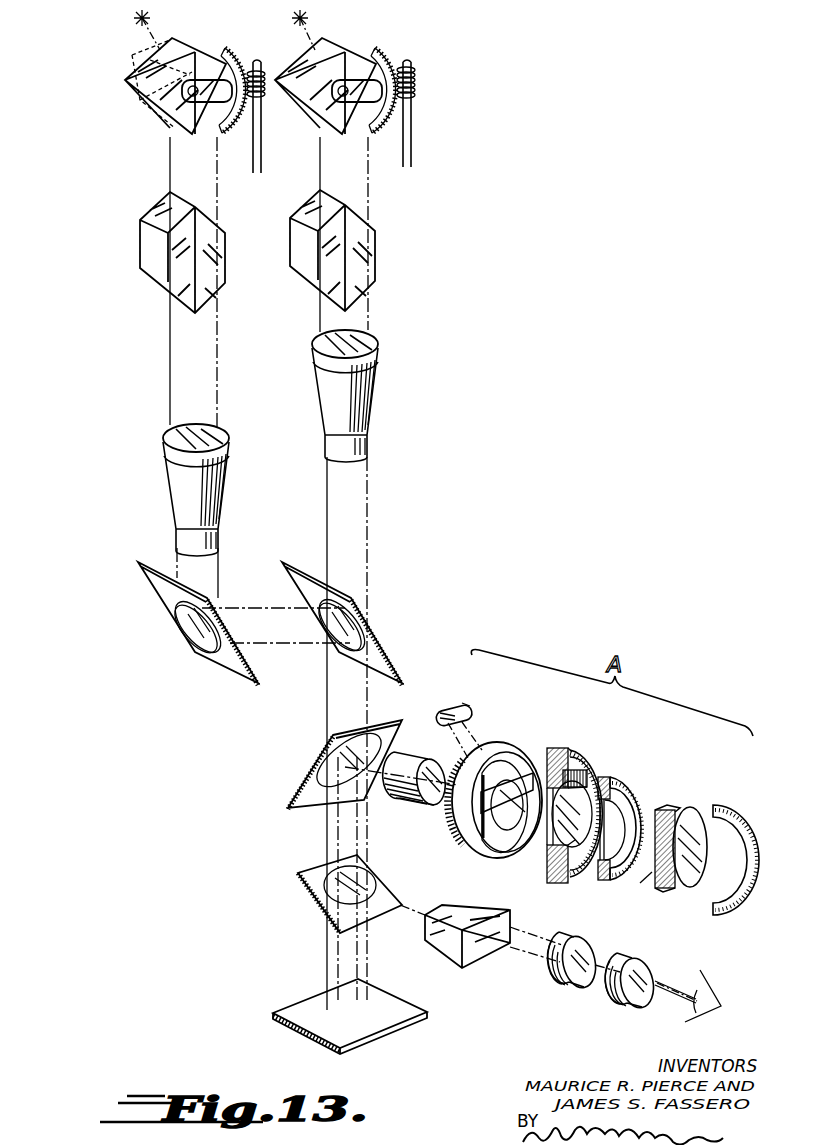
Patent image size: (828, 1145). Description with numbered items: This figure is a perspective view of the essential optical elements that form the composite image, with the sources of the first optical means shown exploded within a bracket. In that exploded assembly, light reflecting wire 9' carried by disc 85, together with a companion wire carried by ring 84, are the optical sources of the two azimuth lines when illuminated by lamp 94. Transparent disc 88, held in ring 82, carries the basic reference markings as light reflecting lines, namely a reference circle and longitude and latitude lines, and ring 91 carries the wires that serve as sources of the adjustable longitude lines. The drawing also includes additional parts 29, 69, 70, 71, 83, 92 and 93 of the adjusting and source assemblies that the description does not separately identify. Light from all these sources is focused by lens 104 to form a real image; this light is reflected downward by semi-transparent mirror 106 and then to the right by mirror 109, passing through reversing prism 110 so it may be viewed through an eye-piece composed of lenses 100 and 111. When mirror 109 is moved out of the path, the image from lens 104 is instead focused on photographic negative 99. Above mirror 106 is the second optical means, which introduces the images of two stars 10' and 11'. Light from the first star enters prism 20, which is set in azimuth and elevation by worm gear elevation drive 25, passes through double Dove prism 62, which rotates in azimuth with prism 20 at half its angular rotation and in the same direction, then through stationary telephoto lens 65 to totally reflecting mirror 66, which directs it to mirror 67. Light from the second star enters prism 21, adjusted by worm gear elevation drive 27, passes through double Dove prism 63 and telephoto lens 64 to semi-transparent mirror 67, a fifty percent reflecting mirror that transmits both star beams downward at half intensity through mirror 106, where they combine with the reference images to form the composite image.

The star 10' is at (156, 30).
The star 11' is at (317, 30).
The prism 20 is at (173, 38).
The prism 21 is at (341, 38).
The worm gear elevation drive 25 is at (262, 95).
The worm gear elevation drive 27 is at (417, 81).
The second adjusting worm shaft 29 is at (415, 121).
The double Dove prism 62 is at (143, 255).
The double Dove prism 63 is at (367, 248).
The telephoto lens 64 is at (378, 388).
The telephoto lens 65 is at (175, 482).
The mirror 66 is at (167, 600).
The semi-transparent mirror 67 is at (390, 641).
The graduated scale disc 69 is at (592, 760).
The scale ring 70 is at (635, 793).
The lens disc 71 is at (687, 885).
The ring 82 is at (567, 750).
The arcuate scale segment 83 is at (740, 812).
The ring 84 is at (605, 880).
The disc 85 is at (677, 810).
The transparent disc 88 is at (550, 845).
The ring 91 is at (508, 745).
The reticle plate 92 is at (518, 766).
The index line 93 is at (507, 837).
The lamp 94 is at (458, 708).
The photographic negative 99 is at (273, 1015).
The lens 100 is at (575, 988).
The lens 104 is at (413, 804).
The semi-transparent mirror 106 is at (298, 778).
The mirror 109 is at (307, 887).
The reversing prism 110 is at (465, 968).
The lens 111 is at (623, 1007).
The light reflecting wire 9' is at (638, 886).